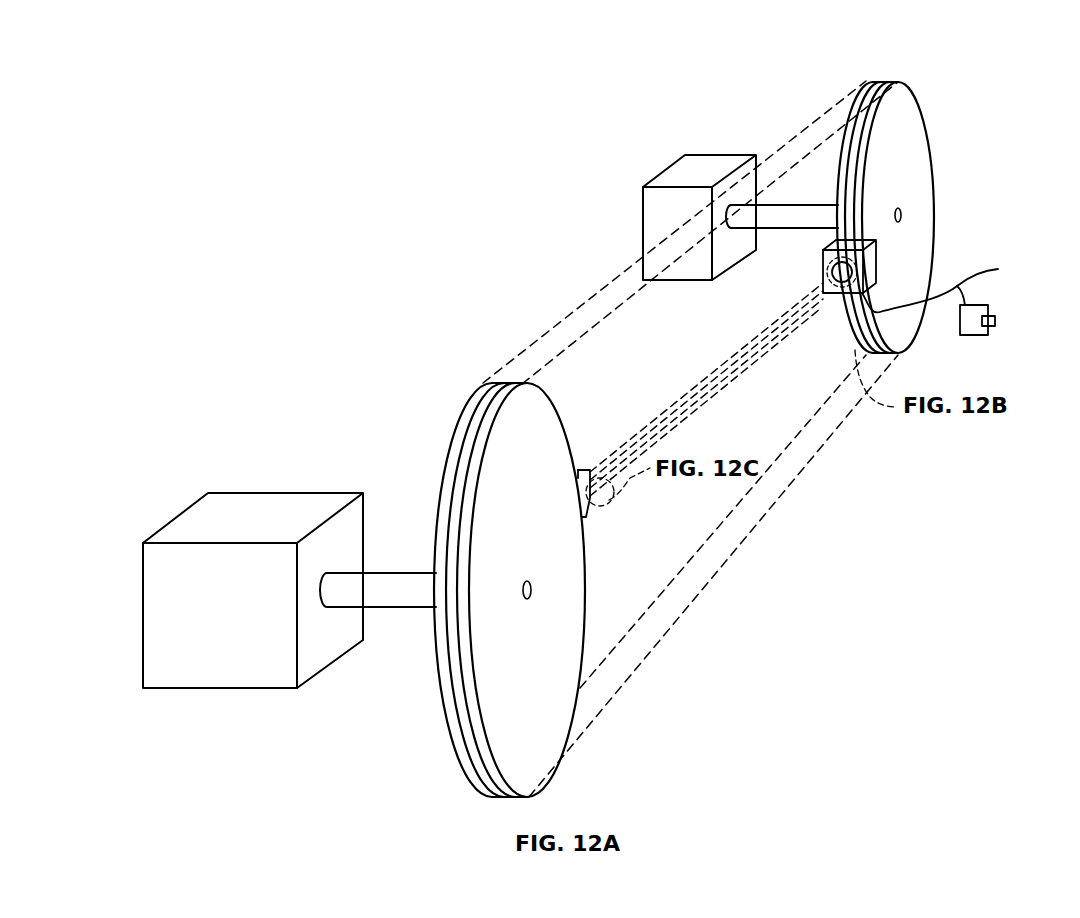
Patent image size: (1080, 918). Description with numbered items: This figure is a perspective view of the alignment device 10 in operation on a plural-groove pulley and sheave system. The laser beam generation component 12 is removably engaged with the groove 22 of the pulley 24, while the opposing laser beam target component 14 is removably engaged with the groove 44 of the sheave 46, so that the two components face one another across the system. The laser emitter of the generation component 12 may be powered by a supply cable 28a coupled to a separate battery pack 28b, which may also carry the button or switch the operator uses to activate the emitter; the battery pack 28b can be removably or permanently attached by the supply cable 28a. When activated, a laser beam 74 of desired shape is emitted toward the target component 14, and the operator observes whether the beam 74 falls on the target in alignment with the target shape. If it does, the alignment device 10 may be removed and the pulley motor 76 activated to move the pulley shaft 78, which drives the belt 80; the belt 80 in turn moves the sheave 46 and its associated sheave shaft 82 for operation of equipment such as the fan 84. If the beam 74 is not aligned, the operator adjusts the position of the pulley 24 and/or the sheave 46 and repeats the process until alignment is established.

The alignment device 10 is at (526, 247).
The laser beam generation component 12 is at (816, 280).
The laser beam target component 14 is at (594, 527).
The groove 22 is at (886, 84).
The pulley 24 is at (916, 127).
The supply cable 28a is at (951, 285).
The battery pack 28b is at (997, 321).
The groove 44 is at (486, 412).
The sheave 46 is at (540, 782).
The laser beam 74 is at (677, 400).
The pulley motor 76 is at (697, 276).
The pulley shaft 78 is at (815, 222).
The belt 80 is at (528, 352).
The sheave shaft 82 is at (362, 581).
The fan 84 is at (341, 493).